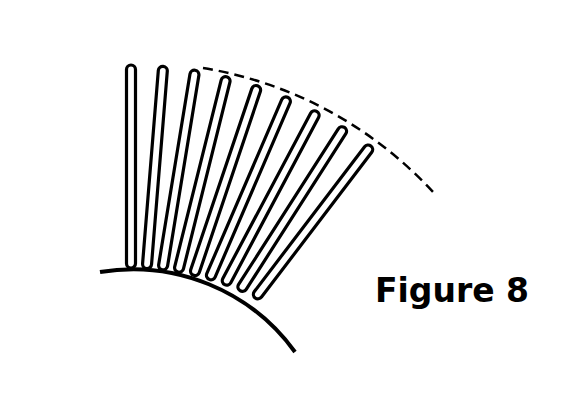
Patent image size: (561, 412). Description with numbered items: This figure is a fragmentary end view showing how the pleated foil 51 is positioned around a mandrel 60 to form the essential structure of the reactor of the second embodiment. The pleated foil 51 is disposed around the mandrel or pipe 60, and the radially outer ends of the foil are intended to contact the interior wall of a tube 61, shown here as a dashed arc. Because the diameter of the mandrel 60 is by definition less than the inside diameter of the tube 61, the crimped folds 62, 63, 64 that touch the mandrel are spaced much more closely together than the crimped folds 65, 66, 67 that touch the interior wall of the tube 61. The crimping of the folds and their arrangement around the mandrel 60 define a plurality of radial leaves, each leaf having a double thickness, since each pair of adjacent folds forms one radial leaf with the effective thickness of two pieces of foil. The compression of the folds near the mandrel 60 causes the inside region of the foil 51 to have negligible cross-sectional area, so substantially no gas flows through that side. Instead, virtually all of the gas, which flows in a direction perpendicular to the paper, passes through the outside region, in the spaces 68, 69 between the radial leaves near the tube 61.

The pleated foil 51 is at (124, 192).
The mandrel 60 is at (268, 330).
The tube 61 is at (363, 132).
The crimped fold 62 is at (153, 275).
The crimped fold 63 is at (169, 276).
The crimped fold 64 is at (179, 277).
The crimped fold 65 is at (230, 78).
The crimped fold 66 is at (263, 92).
The crimped fold 67 is at (291, 96).
The space between radial leaves 68 is at (146, 105).
The space between radial leaves 69 is at (178, 107).